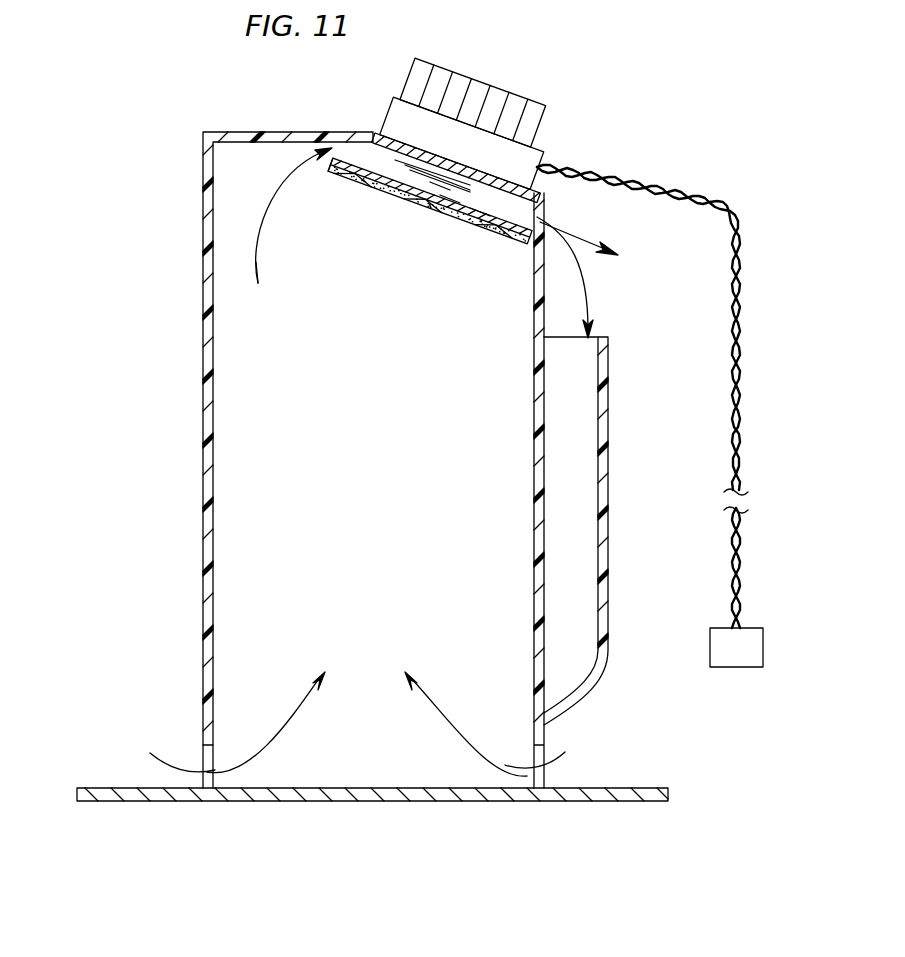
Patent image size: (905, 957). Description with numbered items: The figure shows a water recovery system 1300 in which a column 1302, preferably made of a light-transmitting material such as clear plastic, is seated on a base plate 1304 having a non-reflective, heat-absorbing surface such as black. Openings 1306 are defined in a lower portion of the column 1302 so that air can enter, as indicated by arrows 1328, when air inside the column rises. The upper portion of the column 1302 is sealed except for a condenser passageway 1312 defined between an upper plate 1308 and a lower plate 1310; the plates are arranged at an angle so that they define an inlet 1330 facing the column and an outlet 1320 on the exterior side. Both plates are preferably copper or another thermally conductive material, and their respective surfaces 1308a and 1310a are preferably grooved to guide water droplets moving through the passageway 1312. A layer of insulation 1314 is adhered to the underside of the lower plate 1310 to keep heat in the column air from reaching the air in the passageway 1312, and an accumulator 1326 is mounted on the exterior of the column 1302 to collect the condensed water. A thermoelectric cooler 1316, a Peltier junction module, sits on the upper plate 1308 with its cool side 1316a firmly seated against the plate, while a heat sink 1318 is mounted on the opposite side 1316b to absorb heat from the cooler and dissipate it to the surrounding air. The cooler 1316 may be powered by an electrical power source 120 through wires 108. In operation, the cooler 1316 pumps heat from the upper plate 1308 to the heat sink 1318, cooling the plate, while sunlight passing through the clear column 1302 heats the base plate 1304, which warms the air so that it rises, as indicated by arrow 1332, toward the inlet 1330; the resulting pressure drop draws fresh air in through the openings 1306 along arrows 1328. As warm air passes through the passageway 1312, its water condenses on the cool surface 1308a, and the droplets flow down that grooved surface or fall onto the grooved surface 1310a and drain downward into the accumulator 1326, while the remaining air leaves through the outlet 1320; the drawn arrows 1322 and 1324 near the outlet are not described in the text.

The wires 108 is at (605, 178).
The electrical power source 120 is at (750, 635).
The water recovery system 1300 is at (162, 132).
The column 1302 is at (188, 402).
The base plate 1304 is at (112, 788).
The openings 1306 is at (205, 752).
The upper plate 1308 is at (388, 182).
The surface of upper plate 1308a is at (338, 170).
The lower plate 1310 is at (436, 172).
The surface of lower plate 1310a is at (450, 188).
The condenser passageway 1312 is at (458, 192).
The layer of insulation 1314 is at (481, 200).
The thermoelectric cooler 1316 is at (466, 129).
The cool side of thermoelectric cooler 1316a is at (380, 144).
The opposite side of thermoelectric cooler 1316b is at (538, 152).
The heat sink 1318 is at (487, 92).
The outlet 1320 is at (540, 217).
The outlet airflow 1322 is at (598, 238).
The recirculated airflow 1324 is at (590, 283).
The accumulator 1326 is at (608, 356).
The arrows 1328 is at (436, 718).
The inlet 1330 is at (320, 124).
The arrow 1332 is at (256, 262).